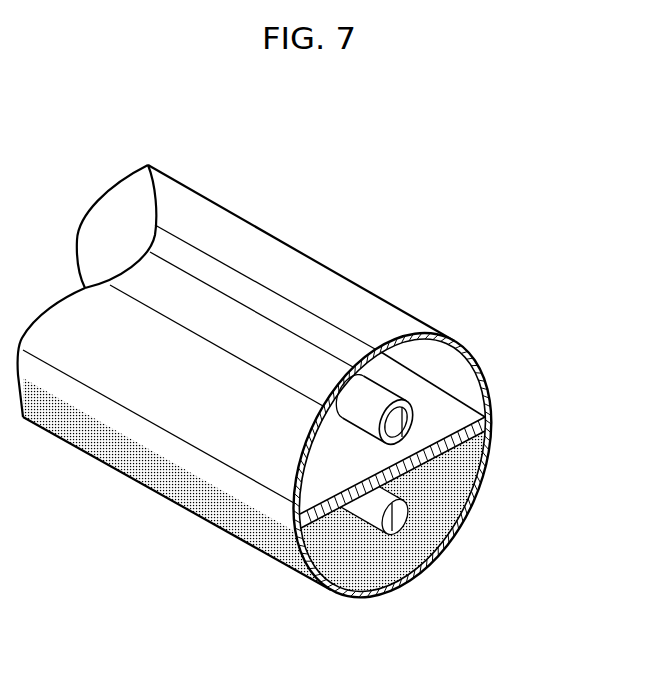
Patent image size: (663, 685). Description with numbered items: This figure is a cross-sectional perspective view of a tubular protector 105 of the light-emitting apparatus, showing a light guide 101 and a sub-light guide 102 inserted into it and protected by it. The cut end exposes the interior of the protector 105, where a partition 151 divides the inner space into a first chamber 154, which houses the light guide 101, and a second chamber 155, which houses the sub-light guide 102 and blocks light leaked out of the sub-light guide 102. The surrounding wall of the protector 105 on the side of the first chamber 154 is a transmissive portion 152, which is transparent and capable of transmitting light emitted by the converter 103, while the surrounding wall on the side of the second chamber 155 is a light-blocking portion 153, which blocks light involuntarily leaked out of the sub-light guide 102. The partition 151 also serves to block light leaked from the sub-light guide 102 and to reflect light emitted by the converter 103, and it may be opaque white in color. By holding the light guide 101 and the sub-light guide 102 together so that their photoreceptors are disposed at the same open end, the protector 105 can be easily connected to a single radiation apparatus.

The light guide 101 is at (400, 421).
The sub-light guide 102 is at (405, 516).
The converter 103 is at (387, 398).
The protector 105 is at (272, 247).
The partition 151 is at (450, 408).
The transmissive portion 152 is at (347, 312).
The light-blocking portion 153 is at (107, 447).
The first chamber 154 is at (328, 453).
The second chamber 155 is at (358, 552).